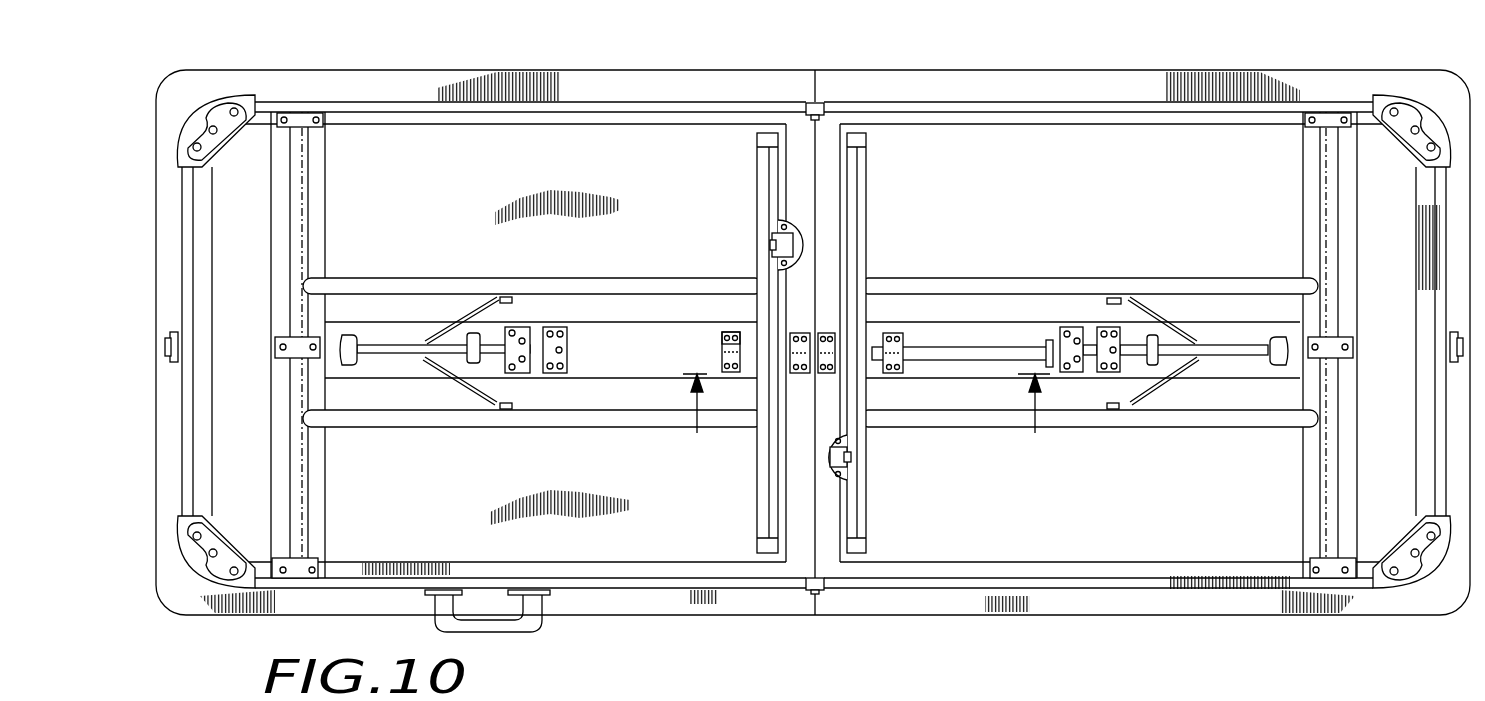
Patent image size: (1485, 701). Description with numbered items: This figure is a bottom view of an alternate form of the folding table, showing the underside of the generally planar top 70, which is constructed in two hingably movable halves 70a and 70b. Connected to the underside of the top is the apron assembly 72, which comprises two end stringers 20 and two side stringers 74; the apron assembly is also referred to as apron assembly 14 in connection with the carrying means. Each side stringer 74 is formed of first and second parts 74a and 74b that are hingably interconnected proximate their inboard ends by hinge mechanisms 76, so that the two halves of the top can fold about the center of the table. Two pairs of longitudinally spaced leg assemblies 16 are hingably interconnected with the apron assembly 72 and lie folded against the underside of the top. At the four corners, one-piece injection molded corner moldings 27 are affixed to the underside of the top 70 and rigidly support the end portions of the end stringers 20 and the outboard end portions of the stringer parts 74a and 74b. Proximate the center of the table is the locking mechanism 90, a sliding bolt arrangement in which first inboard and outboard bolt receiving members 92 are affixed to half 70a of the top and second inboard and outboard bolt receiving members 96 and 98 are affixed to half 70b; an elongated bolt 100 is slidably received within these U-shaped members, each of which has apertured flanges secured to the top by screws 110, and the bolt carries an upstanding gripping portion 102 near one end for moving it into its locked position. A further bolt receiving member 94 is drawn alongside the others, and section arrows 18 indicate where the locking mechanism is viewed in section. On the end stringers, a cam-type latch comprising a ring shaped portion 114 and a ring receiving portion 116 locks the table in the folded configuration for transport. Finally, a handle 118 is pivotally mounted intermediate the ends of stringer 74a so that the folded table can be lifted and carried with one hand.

The top 70 is at (930, 64).
The first half of top 70a is at (588, 343).
The second half of top 70b is at (1006, 343).
The apron assembly 72 is at (412, 93).
The side stringers 74 is at (670, 100).
The first part of side stringer 74a is at (553, 107).
The second part of side stringer 74b is at (1150, 108).
The hinge mechanisms 76 is at (824, 104).
The corner moldings 27 is at (232, 95).
The end stringers 20 is at (200, 455).
The leg assemblies 16 is at (470, 428).
The section line 18 is at (863, 421).
The apron assembly 14 is at (765, 557).
The locking mechanism 90 is at (876, 333).
The first inboard and outboard bolt receiving members 92 is at (799, 333).
The mounting bracket 94 is at (720, 340).
The second inboard bolt receiving member 96 is at (825, 373).
The second outboard bolt receiving member 98 is at (903, 338).
The bolt 100 is at (948, 360).
The gripping portion 102 is at (1050, 340).
The screws 110 is at (727, 332).
The ring shaped portion 114 is at (180, 343).
The ring receiving portion 116 is at (1445, 340).
The handle 118 is at (540, 625).